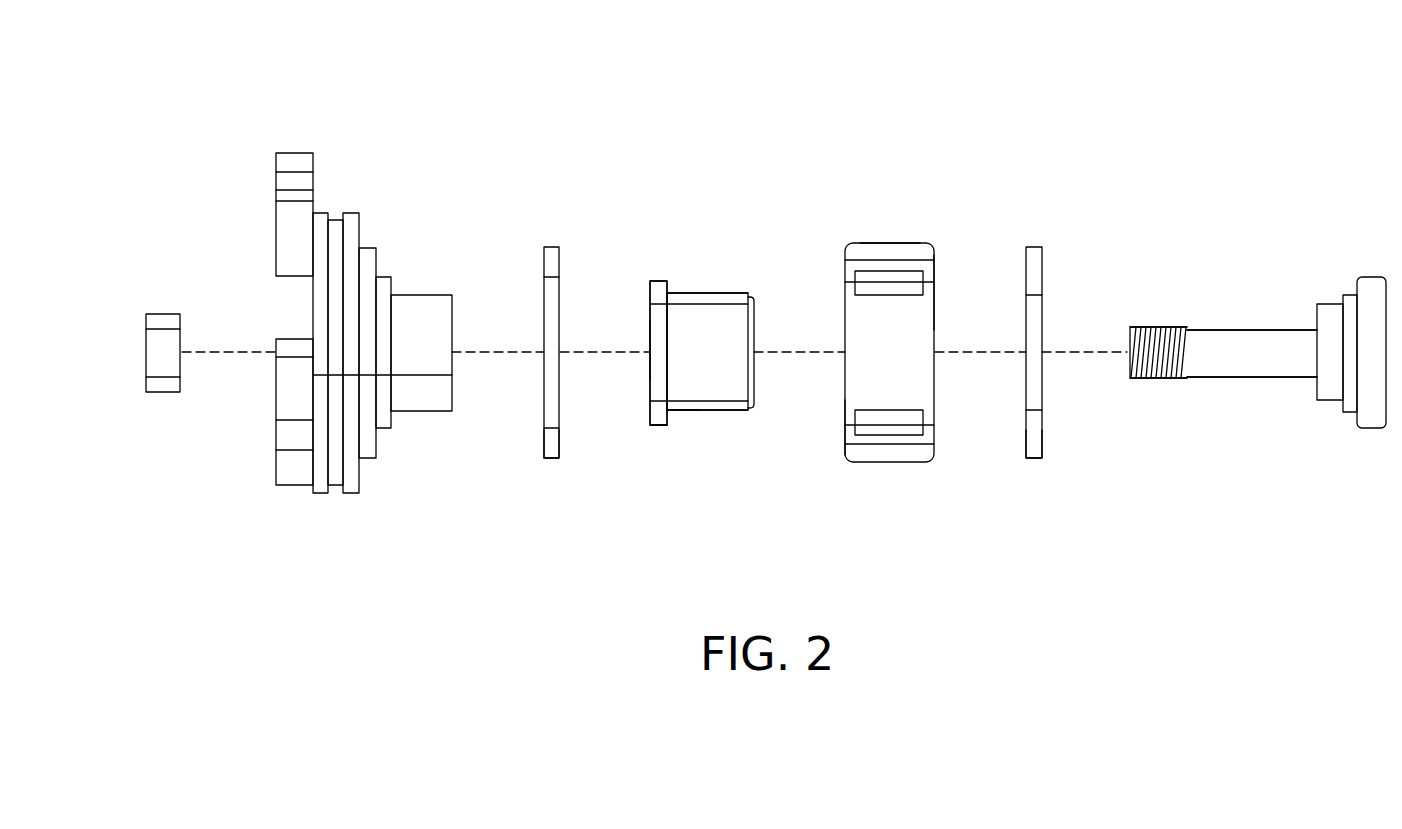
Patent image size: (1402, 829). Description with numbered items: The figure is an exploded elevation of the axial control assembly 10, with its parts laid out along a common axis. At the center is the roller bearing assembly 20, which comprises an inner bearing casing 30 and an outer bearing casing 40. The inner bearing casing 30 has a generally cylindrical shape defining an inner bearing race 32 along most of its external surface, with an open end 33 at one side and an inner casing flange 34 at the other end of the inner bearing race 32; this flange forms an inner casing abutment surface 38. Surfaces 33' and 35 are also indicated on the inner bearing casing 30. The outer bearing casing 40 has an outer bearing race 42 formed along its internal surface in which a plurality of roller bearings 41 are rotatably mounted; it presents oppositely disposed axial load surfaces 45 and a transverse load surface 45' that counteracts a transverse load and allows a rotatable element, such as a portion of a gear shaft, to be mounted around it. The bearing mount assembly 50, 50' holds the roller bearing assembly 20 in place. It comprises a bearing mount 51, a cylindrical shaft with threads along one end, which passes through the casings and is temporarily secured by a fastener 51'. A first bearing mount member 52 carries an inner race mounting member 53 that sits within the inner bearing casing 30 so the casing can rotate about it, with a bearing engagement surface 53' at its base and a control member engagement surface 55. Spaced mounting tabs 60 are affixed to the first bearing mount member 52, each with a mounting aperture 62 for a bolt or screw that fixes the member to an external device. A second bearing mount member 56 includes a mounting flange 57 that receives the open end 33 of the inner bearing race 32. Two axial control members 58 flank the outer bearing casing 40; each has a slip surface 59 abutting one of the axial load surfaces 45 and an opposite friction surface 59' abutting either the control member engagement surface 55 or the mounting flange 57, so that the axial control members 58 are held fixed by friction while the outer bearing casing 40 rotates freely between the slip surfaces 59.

The axial control assembly 10 is at (438, 651).
The roller bearing assembly 20 is at (944, 140).
The inner bearing casing 30 is at (695, 261).
The inner bearing race 32 is at (727, 293).
The open end 33 is at (774, 331).
The bushing flange face 33' is at (629, 392).
The inner casing flange 34 is at (658, 428).
The shoulder 35 is at (668, 418).
The inner casing abutment surface 38 is at (650, 297).
The outer bearing casing 40 is at (889, 483).
The roller bearings 41 is at (905, 295).
The outer bearing race 42 is at (923, 428).
The axial load surfaces 45 is at (890, 362).
The transverse load surface 45' is at (879, 193).
The bearing mount assembly 50 is at (340, 59).
The bearing mount assembly 50' is at (1199, 113).
The bearing mount 51 is at (1223, 306).
The fastener 51' is at (147, 419).
The first bearing mount member 52 is at (375, 221).
The inner race mounting member 53 is at (441, 293).
The bearing engagement surface 53' is at (437, 371).
The control member engagement surface 55 is at (376, 448).
The second bearing mount member 56 is at (1346, 440).
The mounting flange 57 is at (1342, 298).
The axial control member 58 is at (551, 246).
The slip surface 59 is at (793, 492).
The friction surface 59' is at (791, 492).
The mounting tabs 60 is at (293, 152).
The mounting aperture 62 is at (292, 188).